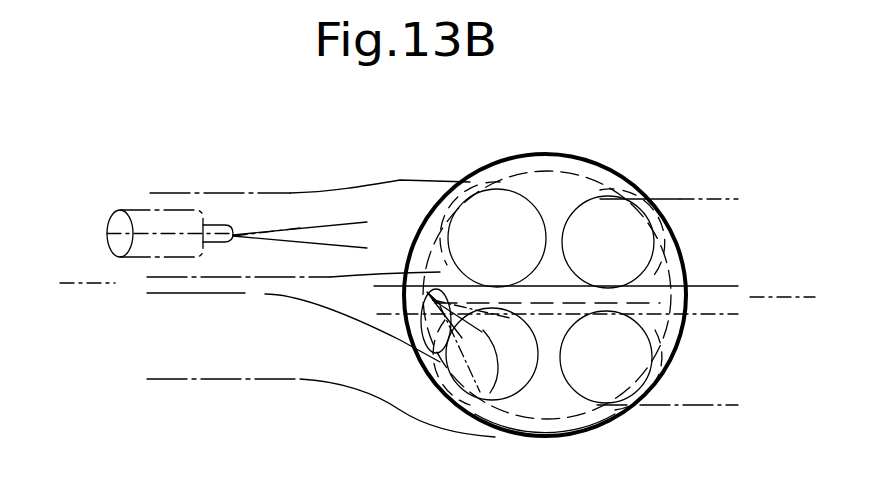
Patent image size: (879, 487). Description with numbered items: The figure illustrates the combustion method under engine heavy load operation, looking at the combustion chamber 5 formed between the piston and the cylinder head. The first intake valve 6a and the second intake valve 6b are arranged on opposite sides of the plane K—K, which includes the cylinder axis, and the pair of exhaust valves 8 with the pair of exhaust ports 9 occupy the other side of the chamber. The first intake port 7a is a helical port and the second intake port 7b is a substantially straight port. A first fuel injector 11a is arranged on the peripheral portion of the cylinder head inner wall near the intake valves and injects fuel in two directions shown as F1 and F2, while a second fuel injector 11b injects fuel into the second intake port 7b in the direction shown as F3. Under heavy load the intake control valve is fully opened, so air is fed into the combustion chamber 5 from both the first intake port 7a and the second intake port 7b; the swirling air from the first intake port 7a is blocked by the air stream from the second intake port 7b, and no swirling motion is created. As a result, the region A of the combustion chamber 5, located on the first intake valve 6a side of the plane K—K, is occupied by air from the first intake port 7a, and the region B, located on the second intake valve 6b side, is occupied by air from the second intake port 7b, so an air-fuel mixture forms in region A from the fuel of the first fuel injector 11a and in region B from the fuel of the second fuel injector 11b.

The combustion chamber 5 is at (538, 153).
The region B of the combustion chamber B is at (556, 170).
The region A of the combustion chamber A is at (547, 432).
The first intake valve 6a is at (503, 402).
The second intake valve 6b is at (495, 185).
The pair of exhaust valves 8 is at (578, 205).
The pair of exhaust ports 9 is at (718, 208).
The plane K— K is at (433, 291).
The first fuel injector 11a is at (383, 303).
The second fuel injector 11b is at (163, 217).
The first intake port 7a is at (386, 403).
The second intake port 7b is at (400, 180).
The fuel injection direction F1 is at (470, 345).
The fuel injection direction F2 is at (497, 365).
The fuel injection direction F3 is at (318, 228).